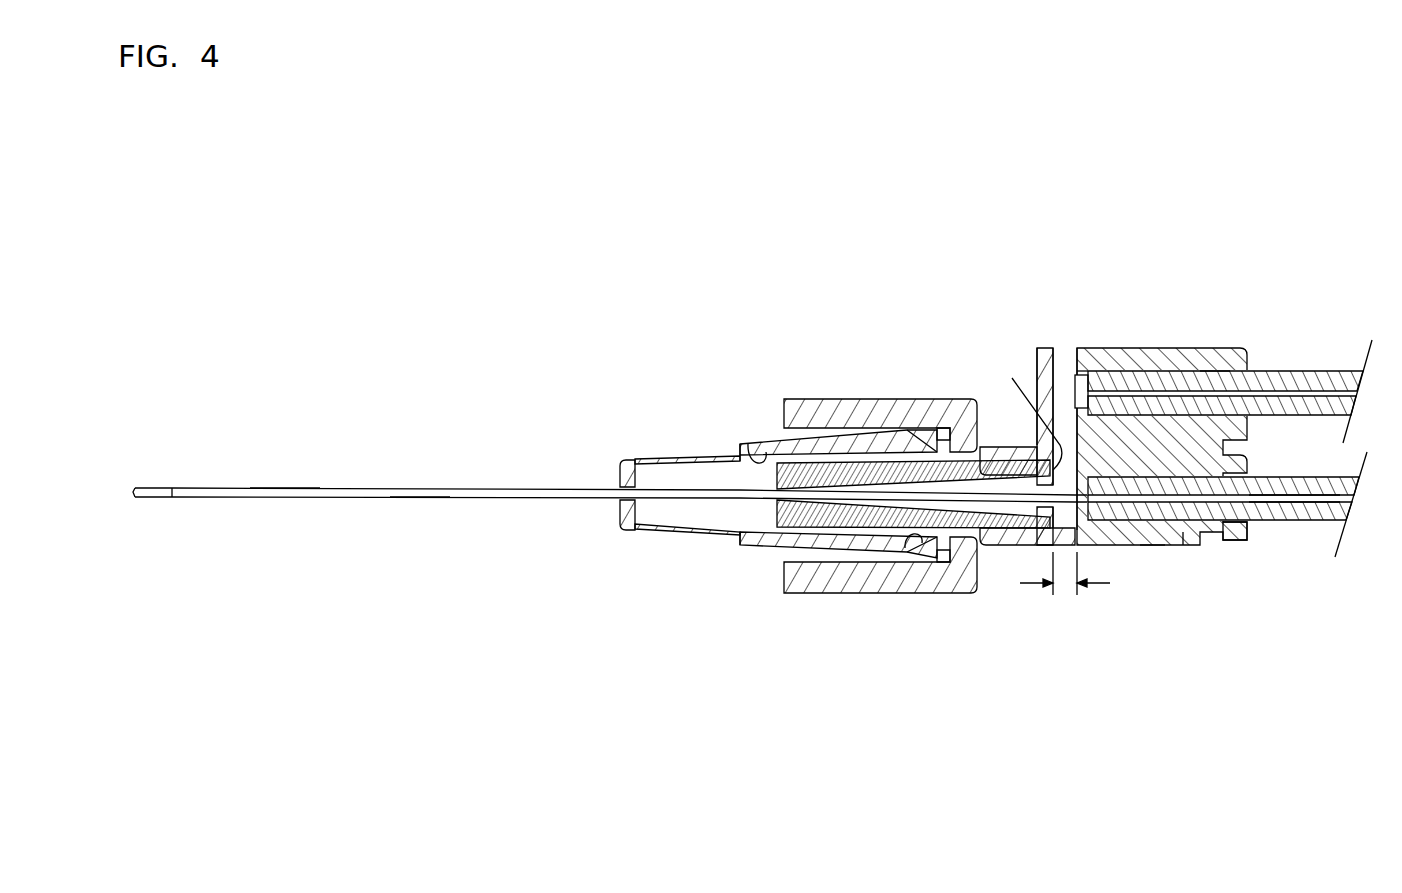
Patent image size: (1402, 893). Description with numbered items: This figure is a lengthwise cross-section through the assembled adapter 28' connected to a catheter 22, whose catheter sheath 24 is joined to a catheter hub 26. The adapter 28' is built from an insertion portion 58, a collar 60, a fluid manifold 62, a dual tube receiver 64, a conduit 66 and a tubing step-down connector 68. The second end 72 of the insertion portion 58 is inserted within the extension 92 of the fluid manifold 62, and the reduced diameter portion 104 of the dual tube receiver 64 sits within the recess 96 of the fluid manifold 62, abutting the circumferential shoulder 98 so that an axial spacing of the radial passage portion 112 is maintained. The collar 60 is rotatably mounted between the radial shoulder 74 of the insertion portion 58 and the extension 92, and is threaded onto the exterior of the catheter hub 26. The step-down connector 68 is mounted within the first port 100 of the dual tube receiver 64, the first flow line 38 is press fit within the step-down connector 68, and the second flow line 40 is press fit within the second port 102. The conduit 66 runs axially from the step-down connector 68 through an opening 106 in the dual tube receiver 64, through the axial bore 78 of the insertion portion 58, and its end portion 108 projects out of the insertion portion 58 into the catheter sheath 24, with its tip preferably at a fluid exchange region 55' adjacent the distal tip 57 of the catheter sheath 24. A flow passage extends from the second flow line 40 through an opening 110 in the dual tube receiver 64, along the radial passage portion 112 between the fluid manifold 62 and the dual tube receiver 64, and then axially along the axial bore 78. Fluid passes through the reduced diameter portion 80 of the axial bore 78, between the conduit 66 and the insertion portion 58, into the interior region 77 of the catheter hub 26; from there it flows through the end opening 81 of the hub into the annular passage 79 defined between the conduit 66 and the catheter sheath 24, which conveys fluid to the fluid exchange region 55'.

The catheter 22 is at (548, 460).
The catheter sheath 24 is at (347, 488).
The catheter hub 26 is at (667, 457).
The adapter 28' is at (1002, 207).
The first flow line 38 is at (1227, 552).
The second flow line 40 is at (1230, 360).
The fluid exchange region 55' is at (158, 459).
The distal tip 57 is at (125, 490).
The insertion portion 58 is at (905, 540).
The collar 60 is at (892, 400).
The fluid manifold 62 is at (1050, 348).
The dual tube receiver 64 is at (1152, 545).
The conduit 66 is at (990, 500).
The tubing step-down connector 68 is at (1237, 540).
The second end 72 is at (1063, 390).
The radial shoulder 74 is at (945, 555).
The interior region 77 is at (767, 457).
The axial bore 78 is at (1008, 472).
The annular passage 79 is at (420, 498).
The reduced diameter portion 80 is at (782, 488).
The end opening 81 is at (623, 488).
The extension 92 is at (1012, 548).
The recess 96 is at (1172, 442).
The circumferential shoulder 98 is at (1075, 353).
The first port 100 is at (1190, 530).
The second port 102 is at (1210, 372).
The reduced diameter portion 104 is at (1112, 358).
The opening 106 is at (1088, 505).
The end portion 108 is at (283, 486).
The opening 110 is at (1083, 375).
The radial passage portion 112 is at (1037, 353).